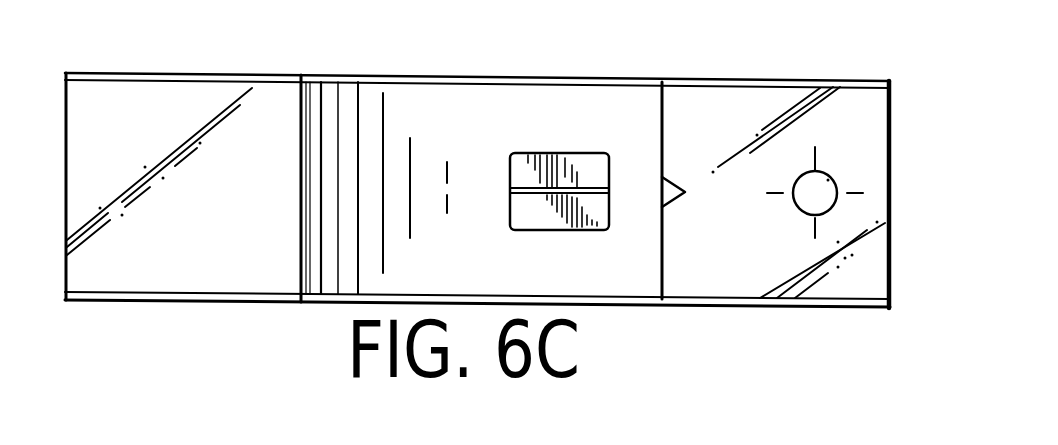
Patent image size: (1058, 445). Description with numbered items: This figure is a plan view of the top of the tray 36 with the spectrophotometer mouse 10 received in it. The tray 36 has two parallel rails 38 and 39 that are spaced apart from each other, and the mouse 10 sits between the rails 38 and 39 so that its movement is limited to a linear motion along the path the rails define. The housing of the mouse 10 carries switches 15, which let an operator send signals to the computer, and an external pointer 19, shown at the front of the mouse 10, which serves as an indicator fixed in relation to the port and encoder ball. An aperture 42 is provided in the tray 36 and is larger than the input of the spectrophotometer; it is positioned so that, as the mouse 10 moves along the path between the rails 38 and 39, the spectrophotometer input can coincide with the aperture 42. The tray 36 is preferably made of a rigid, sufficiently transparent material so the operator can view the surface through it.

The mouse 10 is at (475, 140).
The switches 15 is at (537, 216).
The external pointer 19 is at (673, 203).
The tray 36 is at (138, 135).
The rail 38 is at (797, 81).
The rail 39 is at (832, 308).
The aperture 42 is at (836, 179).